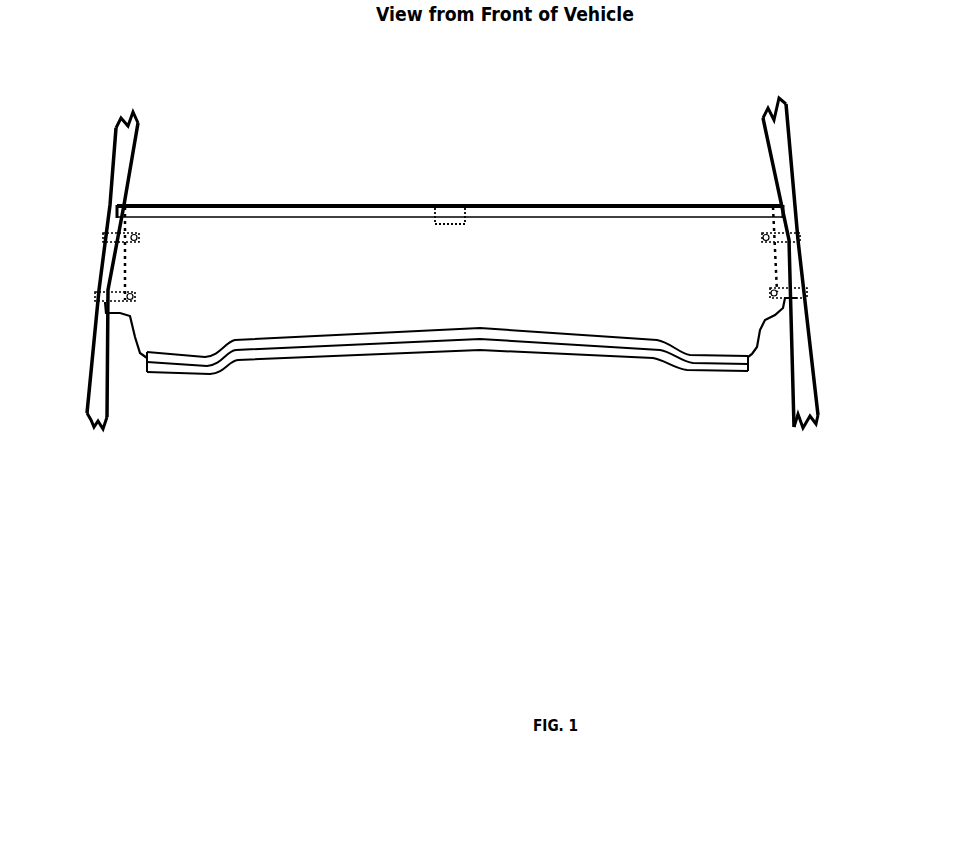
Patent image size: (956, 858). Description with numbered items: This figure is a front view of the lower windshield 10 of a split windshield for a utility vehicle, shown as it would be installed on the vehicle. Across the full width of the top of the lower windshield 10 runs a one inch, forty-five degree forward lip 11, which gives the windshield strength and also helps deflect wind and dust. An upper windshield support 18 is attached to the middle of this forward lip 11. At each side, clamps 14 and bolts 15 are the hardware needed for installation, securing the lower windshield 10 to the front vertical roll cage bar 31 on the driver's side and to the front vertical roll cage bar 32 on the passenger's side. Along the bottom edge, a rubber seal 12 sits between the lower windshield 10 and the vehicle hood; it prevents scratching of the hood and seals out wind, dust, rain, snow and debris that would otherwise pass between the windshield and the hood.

The lower windshield 10 is at (446, 285).
The 1 inch, 45 degree forward lip 11 is at (510, 213).
The rubber seal 12 is at (520, 346).
The clamp, 1¾" 14 is at (103, 238).
The bolt, ¾ inch 15 is at (137, 237).
The upper windshield support 18 is at (449, 205).
The front vertical roll cage bar driver's side 31 is at (777, 157).
The front vertical roll cage bar passenger side 32 is at (125, 160).